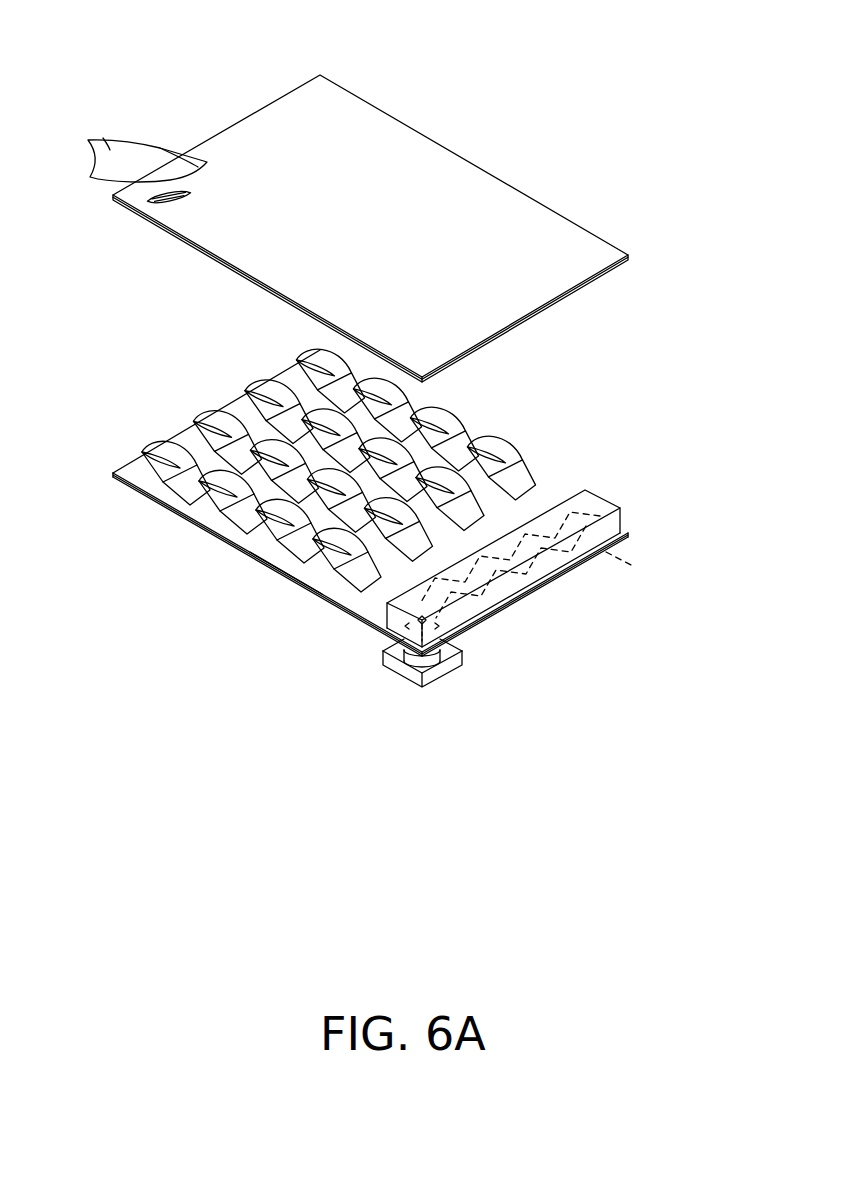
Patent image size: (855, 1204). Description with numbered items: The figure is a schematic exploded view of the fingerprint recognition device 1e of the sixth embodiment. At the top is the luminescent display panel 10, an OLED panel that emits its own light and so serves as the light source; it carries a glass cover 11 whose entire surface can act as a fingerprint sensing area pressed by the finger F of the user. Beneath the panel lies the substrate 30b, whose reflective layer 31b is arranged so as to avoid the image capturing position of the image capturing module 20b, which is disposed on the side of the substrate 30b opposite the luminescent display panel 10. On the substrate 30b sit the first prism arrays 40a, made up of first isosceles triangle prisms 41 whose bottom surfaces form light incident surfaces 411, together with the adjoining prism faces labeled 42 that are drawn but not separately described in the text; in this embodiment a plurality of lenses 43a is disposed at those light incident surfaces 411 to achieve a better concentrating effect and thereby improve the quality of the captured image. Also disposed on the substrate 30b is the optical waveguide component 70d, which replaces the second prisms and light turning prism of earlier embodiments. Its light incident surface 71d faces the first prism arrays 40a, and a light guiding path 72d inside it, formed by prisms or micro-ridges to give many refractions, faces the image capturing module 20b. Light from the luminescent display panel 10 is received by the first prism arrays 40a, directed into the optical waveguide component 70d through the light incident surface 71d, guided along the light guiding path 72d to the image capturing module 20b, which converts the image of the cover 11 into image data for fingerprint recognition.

The fingerprint recognition device 1e is at (148, 52).
The luminescent display panel 10 is at (386, 228).
The cover 11 is at (453, 173).
The finger F is at (100, 140).
The substrate 30b is at (552, 580).
The reflective layer 31b is at (322, 592).
The first prism arrays 40a is at (299, 456).
The first isosceles triangle prisms 41 is at (158, 472).
The sloped face 42 is at (190, 490).
The lenses 43a is at (165, 452).
The light incident surfaces 411 is at (147, 452).
The optical waveguide component 70d is at (538, 539).
The light incident surface 71d is at (557, 502).
The light guiding path 72d is at (646, 572).
The image capturing module 20b is at (435, 674).